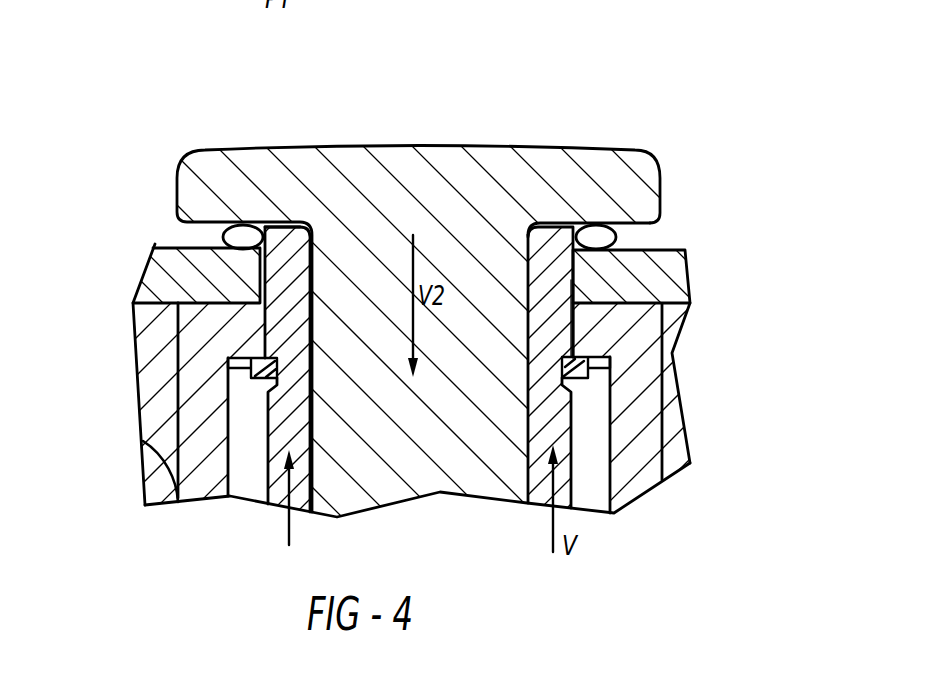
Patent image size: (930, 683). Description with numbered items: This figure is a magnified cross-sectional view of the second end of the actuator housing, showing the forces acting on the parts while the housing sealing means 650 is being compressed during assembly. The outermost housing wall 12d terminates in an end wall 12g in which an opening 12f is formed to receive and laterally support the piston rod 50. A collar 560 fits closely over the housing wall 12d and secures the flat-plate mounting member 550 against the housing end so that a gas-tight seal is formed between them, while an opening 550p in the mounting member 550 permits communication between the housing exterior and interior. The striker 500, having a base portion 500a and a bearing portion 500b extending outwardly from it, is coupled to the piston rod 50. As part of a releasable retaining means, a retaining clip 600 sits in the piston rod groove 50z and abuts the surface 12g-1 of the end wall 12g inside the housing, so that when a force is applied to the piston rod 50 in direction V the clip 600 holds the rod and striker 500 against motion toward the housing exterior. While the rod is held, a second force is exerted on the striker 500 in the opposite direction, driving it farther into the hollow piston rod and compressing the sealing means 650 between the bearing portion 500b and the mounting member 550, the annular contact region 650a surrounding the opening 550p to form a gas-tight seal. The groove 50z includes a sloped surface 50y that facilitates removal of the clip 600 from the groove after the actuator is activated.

The striker 500 is at (447, 163).
The base portion 500a is at (425, 425).
The bearing portion 500b is at (630, 176).
The mounting member 550 is at (262, 282).
The opening 550p is at (575, 290).
The opening 12f is at (279, 226).
The sealing means 650 is at (222, 238).
The annular contact region 650a is at (248, 267).
The end wall 12g is at (247, 328).
The surface 12g-1 is at (258, 361).
The retaining clip 600 is at (262, 367).
The housing wall 12d is at (207, 415).
The collar 560 is at (157, 485).
The piston rod 50 is at (550, 425).
The sloped surface 50y is at (570, 390).
The piston rod groove 50z is at (565, 360).